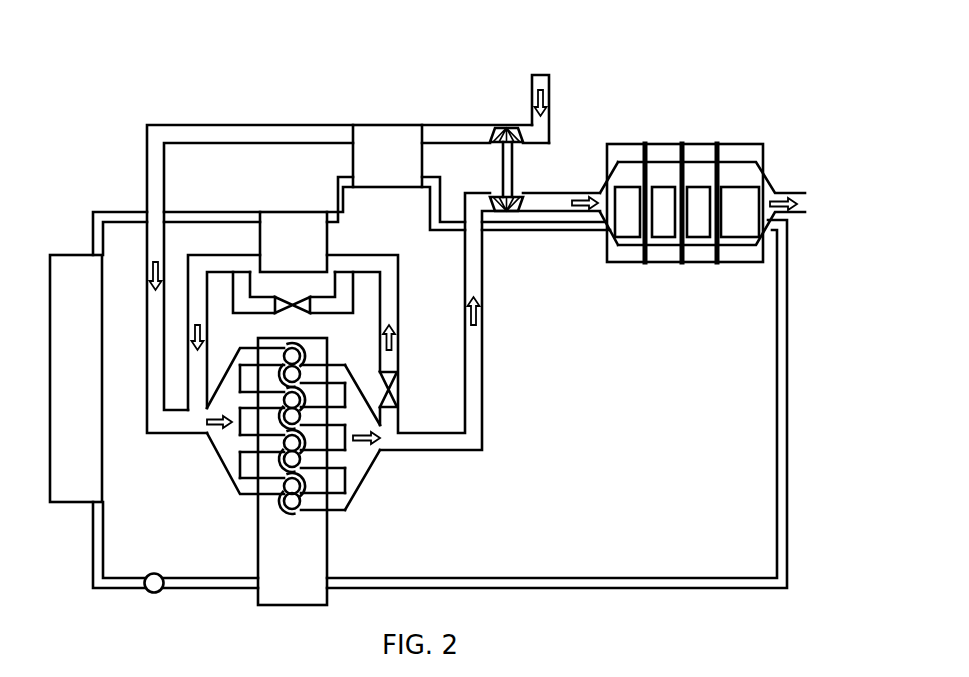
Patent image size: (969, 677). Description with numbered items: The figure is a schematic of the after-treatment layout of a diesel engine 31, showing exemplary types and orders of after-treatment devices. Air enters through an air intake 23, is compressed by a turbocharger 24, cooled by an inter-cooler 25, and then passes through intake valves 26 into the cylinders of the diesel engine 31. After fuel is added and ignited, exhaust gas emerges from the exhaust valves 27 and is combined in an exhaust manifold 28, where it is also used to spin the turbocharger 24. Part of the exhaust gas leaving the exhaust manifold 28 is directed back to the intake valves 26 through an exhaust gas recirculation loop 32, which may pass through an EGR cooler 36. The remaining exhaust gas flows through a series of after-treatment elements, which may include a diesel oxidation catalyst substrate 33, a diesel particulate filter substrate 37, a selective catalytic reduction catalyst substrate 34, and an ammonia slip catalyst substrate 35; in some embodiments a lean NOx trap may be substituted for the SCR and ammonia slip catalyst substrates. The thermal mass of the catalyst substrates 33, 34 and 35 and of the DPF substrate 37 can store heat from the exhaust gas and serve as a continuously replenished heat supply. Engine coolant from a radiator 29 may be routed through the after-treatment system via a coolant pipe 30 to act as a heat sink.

The air intake 23 is at (549, 87).
The turbocharger 24 is at (512, 165).
The inter-cooler 25 is at (383, 137).
The intake valves 26 is at (288, 486).
The exhaust valves 27 is at (292, 508).
The exhaust manifold 28 is at (370, 478).
The radiator 29 is at (62, 254).
The coolant pipe 30 is at (777, 398).
The diesel engine 31 is at (327, 560).
The exhaust gas recirculation loop 32 is at (398, 300).
The diesel oxidation catalyst substrate 33 is at (627, 237).
The selective catalytic reduction catalyst substrate 34 is at (700, 237).
The ammonia slip catalyst substrate 35 is at (740, 237).
The EGR cooler 36 is at (283, 222).
The diesel particulate filter substrate 37 is at (663, 237).